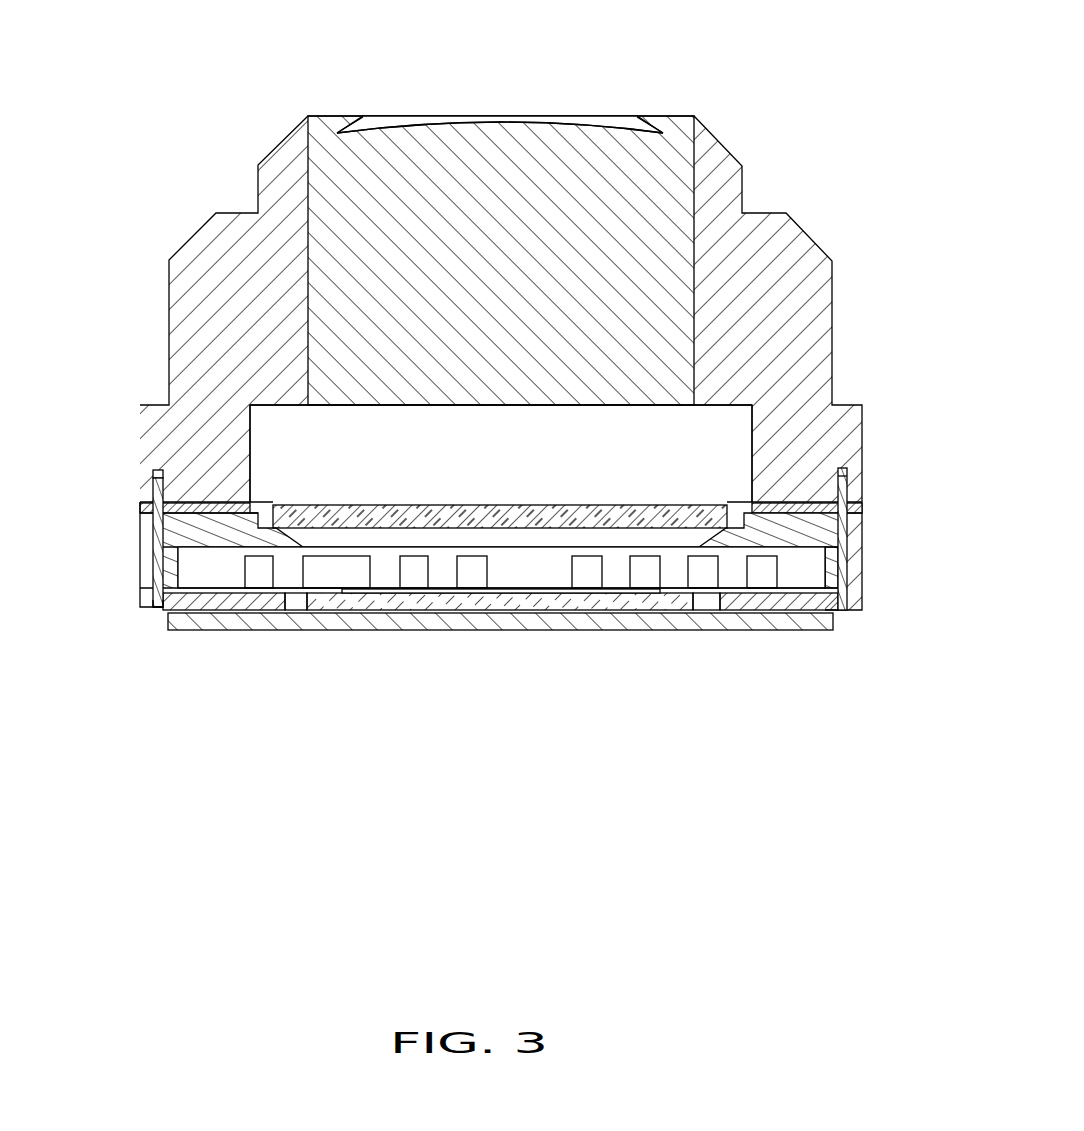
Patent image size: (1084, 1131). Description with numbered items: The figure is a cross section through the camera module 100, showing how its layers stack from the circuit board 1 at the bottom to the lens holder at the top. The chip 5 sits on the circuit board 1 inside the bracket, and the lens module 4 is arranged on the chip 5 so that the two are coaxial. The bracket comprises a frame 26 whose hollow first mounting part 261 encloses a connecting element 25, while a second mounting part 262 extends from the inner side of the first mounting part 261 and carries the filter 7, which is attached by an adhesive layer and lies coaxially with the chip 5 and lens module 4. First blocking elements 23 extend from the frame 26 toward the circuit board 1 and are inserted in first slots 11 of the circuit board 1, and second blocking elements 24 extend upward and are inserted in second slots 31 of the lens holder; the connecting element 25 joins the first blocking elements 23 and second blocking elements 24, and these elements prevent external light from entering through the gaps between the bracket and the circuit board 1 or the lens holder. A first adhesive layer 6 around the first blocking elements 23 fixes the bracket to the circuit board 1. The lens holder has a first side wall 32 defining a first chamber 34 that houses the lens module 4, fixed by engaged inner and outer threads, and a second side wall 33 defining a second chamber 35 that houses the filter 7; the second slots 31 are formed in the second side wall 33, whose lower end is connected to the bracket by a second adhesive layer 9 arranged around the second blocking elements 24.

The camera module 100 is at (412, 60).
The lens module 4 is at (657, 152).
The first chamber 34 is at (699, 216).
The first side wall 32 is at (793, 278).
The second side wall 33 is at (828, 435).
The second chamber 35 is at (714, 436).
The second slot 31 is at (848, 469).
The filter 7 is at (730, 508).
The first adhesive layer 6 is at (825, 590).
The chip 5 is at (650, 600).
The circuit board 1 is at (725, 620).
The second adhesive layer 9 is at (150, 507).
The second blocking element 24 is at (158, 488).
The connecting element 25 is at (155, 545).
The frame 26 is at (148, 558).
The first mounting part 261 is at (172, 570).
The second mounting part 262 is at (277, 535).
The first slot 11 is at (143, 605).
The first blocking element 23 is at (160, 607).